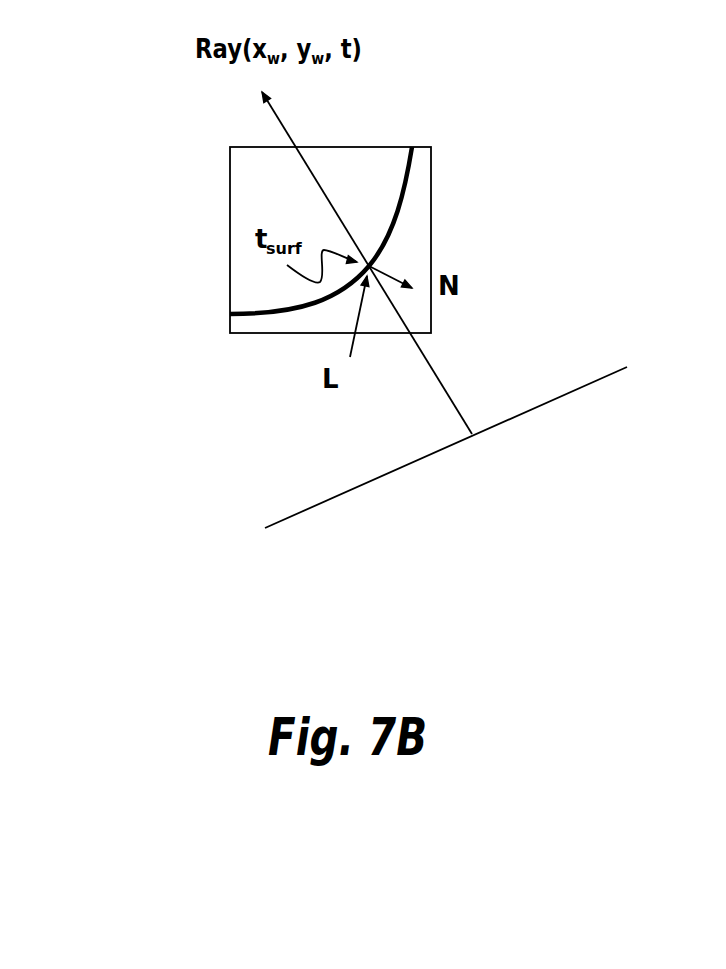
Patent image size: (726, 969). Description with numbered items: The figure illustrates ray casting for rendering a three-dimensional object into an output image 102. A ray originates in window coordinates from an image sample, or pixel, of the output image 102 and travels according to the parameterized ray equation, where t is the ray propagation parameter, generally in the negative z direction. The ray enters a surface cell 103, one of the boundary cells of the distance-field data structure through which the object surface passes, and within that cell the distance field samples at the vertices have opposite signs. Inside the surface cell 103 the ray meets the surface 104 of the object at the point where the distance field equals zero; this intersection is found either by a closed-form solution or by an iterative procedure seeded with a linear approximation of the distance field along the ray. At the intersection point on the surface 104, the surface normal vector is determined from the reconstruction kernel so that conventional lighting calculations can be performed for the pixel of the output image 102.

The output image 102 is at (367, 482).
The surface cell 103 is at (381, 181).
The surface 104 is at (262, 314).